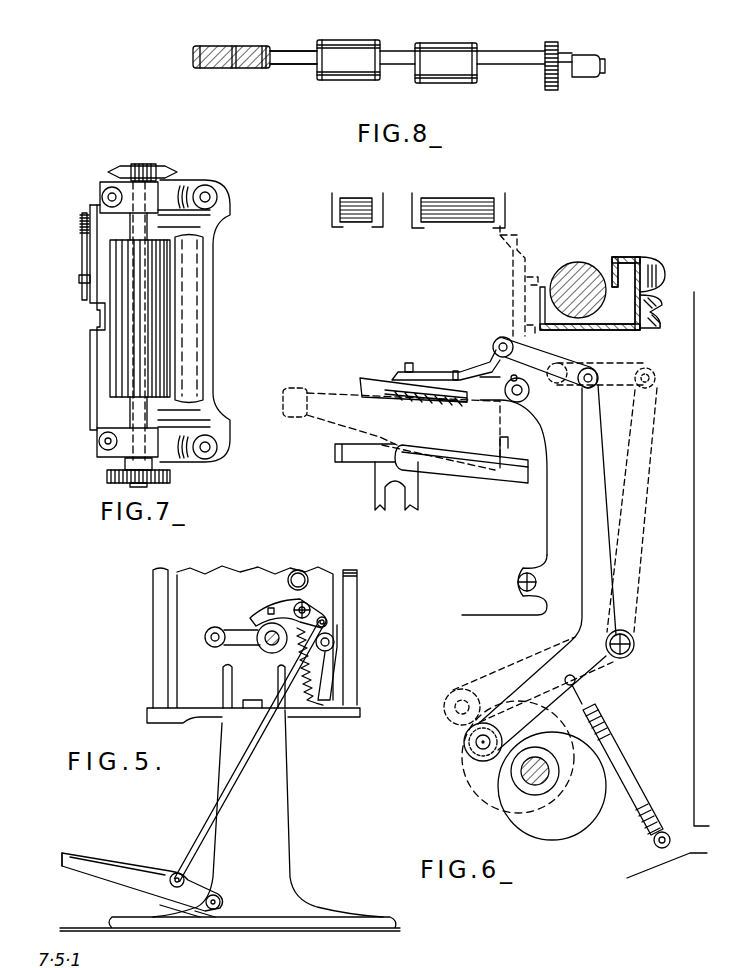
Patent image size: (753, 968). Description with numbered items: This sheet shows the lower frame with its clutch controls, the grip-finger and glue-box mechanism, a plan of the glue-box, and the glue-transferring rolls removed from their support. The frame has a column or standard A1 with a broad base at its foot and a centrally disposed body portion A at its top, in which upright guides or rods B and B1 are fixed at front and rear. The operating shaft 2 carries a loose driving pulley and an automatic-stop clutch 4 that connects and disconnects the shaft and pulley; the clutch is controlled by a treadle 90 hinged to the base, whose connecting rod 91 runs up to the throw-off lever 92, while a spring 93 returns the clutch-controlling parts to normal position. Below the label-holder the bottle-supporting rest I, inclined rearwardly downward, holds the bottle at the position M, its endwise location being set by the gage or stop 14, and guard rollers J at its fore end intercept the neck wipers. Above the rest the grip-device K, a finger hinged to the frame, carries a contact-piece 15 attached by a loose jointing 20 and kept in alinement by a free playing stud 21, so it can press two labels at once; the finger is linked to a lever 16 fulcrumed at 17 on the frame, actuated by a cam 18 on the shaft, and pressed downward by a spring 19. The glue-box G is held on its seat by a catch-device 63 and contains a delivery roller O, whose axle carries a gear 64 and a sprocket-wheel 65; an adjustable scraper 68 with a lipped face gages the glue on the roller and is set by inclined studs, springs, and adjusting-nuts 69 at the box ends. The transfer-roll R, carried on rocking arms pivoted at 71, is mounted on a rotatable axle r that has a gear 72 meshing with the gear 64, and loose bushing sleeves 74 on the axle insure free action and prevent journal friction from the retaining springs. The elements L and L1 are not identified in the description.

In FIG. 8, the loose bushing sleeves 74 is at (218, 68).
In FIG. 8, the rotatable axle r is at (293, 48).
In FIG. 8, the transfer-roll R is at (420, 49).
In FIG. 8, the gear 72 is at (549, 88).
In FIG. 7, the sprocket-wheel 65 is at (158, 172).
In FIG. 7, the delivery roller O is at (140, 318).
In FIG. 6, the delivery roller O is at (579, 270).
In FIG. 7, the glue-box G is at (97, 400).
In FIG. 6, the glue-box G is at (602, 293).
In FIG. 7, the catch-device 63 is at (82, 298).
In FIG. 7, the adjustable scraper 68 is at (184, 332).
In FIG. 6, the adjustable scraper 68 is at (620, 258).
In FIG. 7, the inclined studs, springs, and adjusting-nuts 69 is at (216, 190).
In FIG. 7, the gear 64 is at (107, 478).
In FIG. 6, the coil L1 is at (357, 200).
In FIG. 6, the coil L is at (458, 202).
In FIG. 6, the body portion A is at (534, 543).
In FIG. 5, the body portion A is at (210, 601).
In FIG. 6, the lever 16 is at (578, 486).
In FIG. 6, the fulcrum 17 is at (632, 652).
In FIG. 6, the pivot 71 is at (518, 583).
In FIG. 6, the operating shaft 2 is at (533, 778).
In FIG. 5, the operating shaft 2 is at (270, 642).
In FIG. 6, the cam 18 is at (534, 770).
In FIG. 6, the spring 19 is at (622, 782).
In FIG. 6, the contact-piece 15 is at (372, 380).
In FIG. 6, the grip-device K is at (437, 379).
In FIG. 6, the loose jointing 20 is at (409, 356).
In FIG. 6, the free playing stud 21 is at (465, 362).
In FIG. 6, the bottle position M is at (391, 429).
In FIG. 6, the gage or stop 14 is at (508, 455).
In FIG. 6, the bottle-supporting rest I is at (460, 470).
In FIG. 6, the guard rollers J is at (356, 452).
In FIG. 5, the upright guide B is at (157, 585).
In FIG. 5, the upright guide B1 is at (352, 590).
In FIG. 5, the automatic-stop clutch 4 is at (284, 608).
In FIG. 5, the throw-off lever 92 is at (300, 607).
In FIG. 5, the spring 93 is at (323, 706).
In FIG. 5, the connecting rod 91 is at (208, 818).
In FIG. 5, the column or standard A1 is at (230, 820).
In FIG. 5, the treadle 90 is at (84, 864).